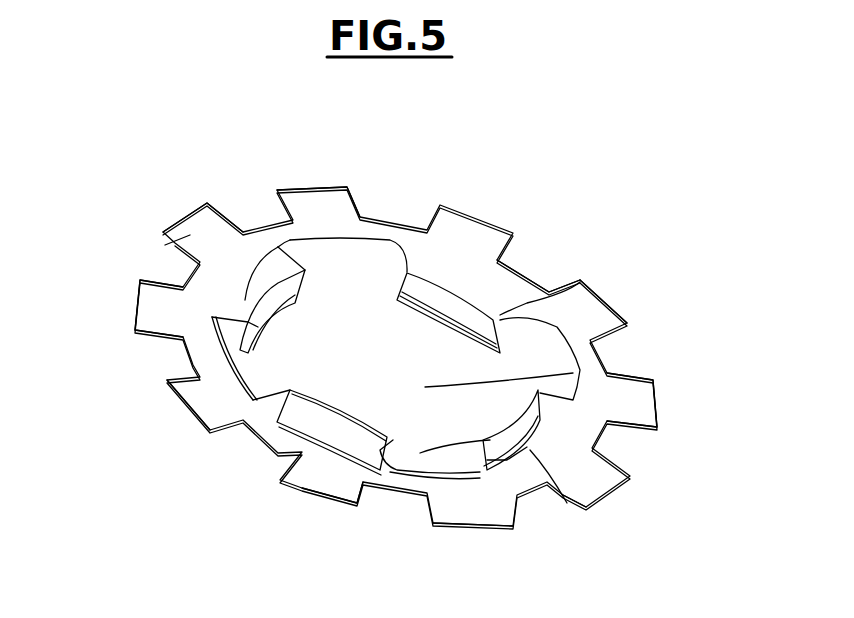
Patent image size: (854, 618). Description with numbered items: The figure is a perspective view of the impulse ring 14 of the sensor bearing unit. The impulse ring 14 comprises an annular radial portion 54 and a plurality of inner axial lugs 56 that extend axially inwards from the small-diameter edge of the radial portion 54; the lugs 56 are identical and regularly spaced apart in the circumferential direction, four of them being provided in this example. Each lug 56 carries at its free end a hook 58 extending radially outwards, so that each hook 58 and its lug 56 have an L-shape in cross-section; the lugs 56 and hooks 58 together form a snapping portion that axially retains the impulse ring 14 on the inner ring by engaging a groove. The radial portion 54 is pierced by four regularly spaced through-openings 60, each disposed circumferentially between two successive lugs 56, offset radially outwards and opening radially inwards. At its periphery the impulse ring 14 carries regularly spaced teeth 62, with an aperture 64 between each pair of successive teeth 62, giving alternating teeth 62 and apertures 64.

The impulse ring 14 is at (488, 188).
The annular radial portion 54 is at (507, 290).
The inner axial lug 56 is at (417, 233).
The hook 58 is at (190, 340).
The through-opening 60 is at (342, 240).
The tooth 62 is at (160, 242).
The aperture 64 is at (243, 230).